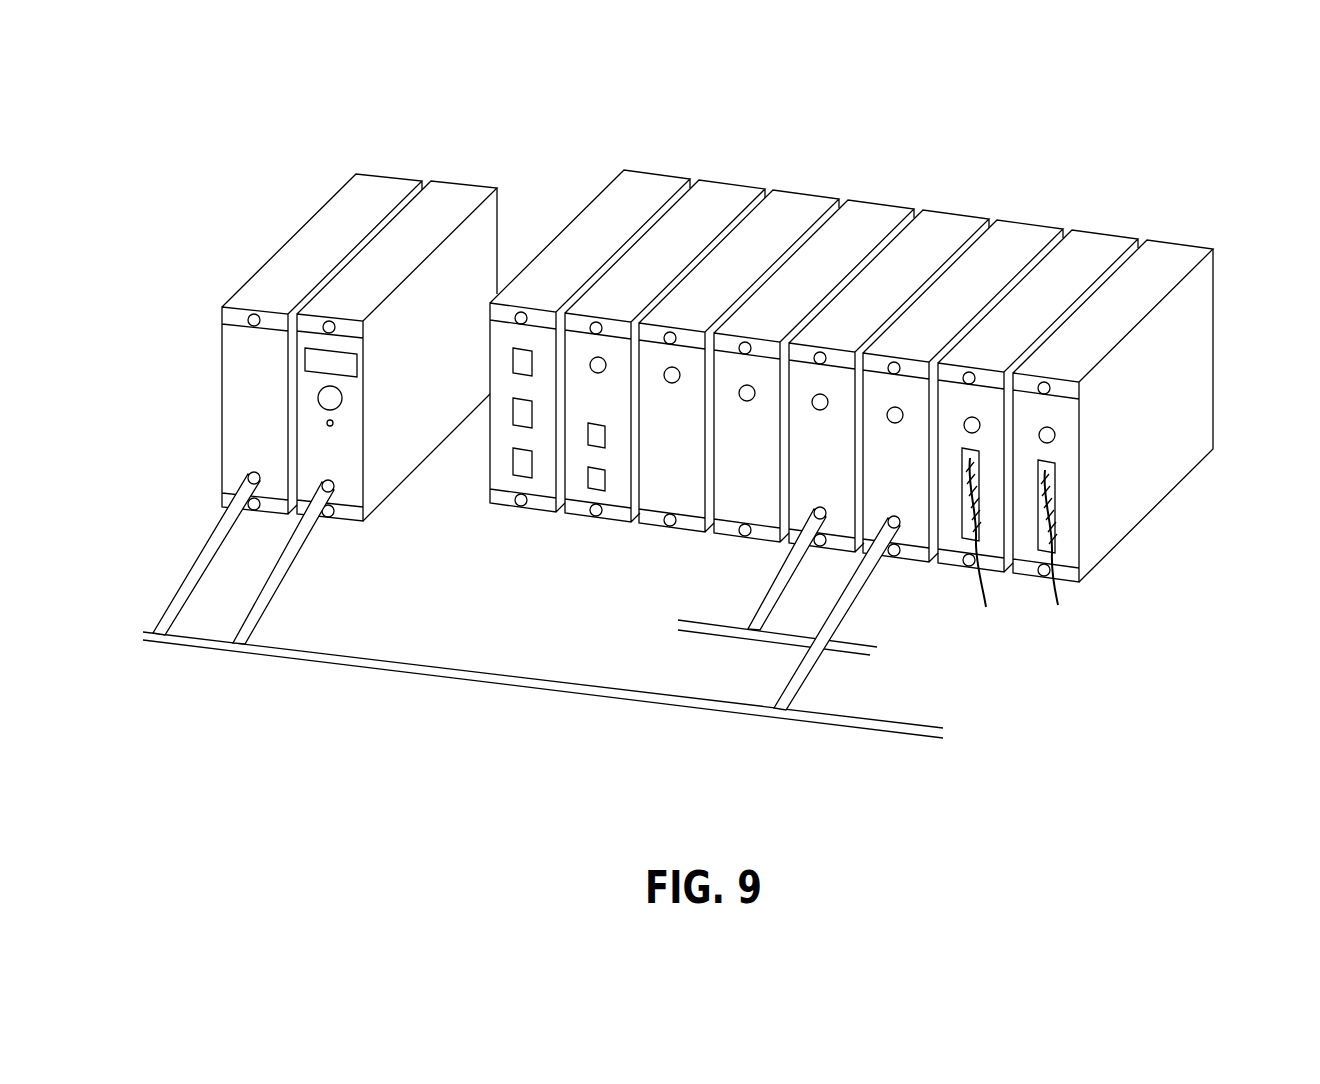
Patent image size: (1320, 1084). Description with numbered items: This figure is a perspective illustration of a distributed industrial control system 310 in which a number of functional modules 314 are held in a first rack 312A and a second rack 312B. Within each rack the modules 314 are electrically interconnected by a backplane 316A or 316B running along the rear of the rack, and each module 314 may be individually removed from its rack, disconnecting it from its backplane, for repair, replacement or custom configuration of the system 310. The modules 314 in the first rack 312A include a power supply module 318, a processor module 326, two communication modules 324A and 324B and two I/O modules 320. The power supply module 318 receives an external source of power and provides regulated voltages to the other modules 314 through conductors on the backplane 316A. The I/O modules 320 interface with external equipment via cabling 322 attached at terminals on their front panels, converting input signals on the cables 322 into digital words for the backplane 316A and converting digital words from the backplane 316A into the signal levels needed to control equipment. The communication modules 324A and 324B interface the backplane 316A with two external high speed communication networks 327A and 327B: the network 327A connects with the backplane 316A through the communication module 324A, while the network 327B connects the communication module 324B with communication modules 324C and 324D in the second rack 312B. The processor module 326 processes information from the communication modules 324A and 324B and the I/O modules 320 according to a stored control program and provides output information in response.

The distributed industrial control system 310 is at (1092, 816).
The first rack 312A is at (1115, 513).
The second rack 312B is at (455, 420).
The functional module 314 is at (313, 327).
The backplane 316A is at (1217, 165).
The backplane 316B is at (530, 112).
The power supply module 318 is at (506, 484).
The I/O module 320 is at (1063, 472).
The cabling 322 is at (987, 607).
The communication module 324A is at (826, 392).
The communication module 324B is at (912, 397).
The communication module 324C is at (242, 443).
The communication module 324D is at (347, 491).
The processor module 326 is at (580, 491).
The high speed communication network 327A is at (688, 620).
The high speed communication network 327B is at (379, 660).